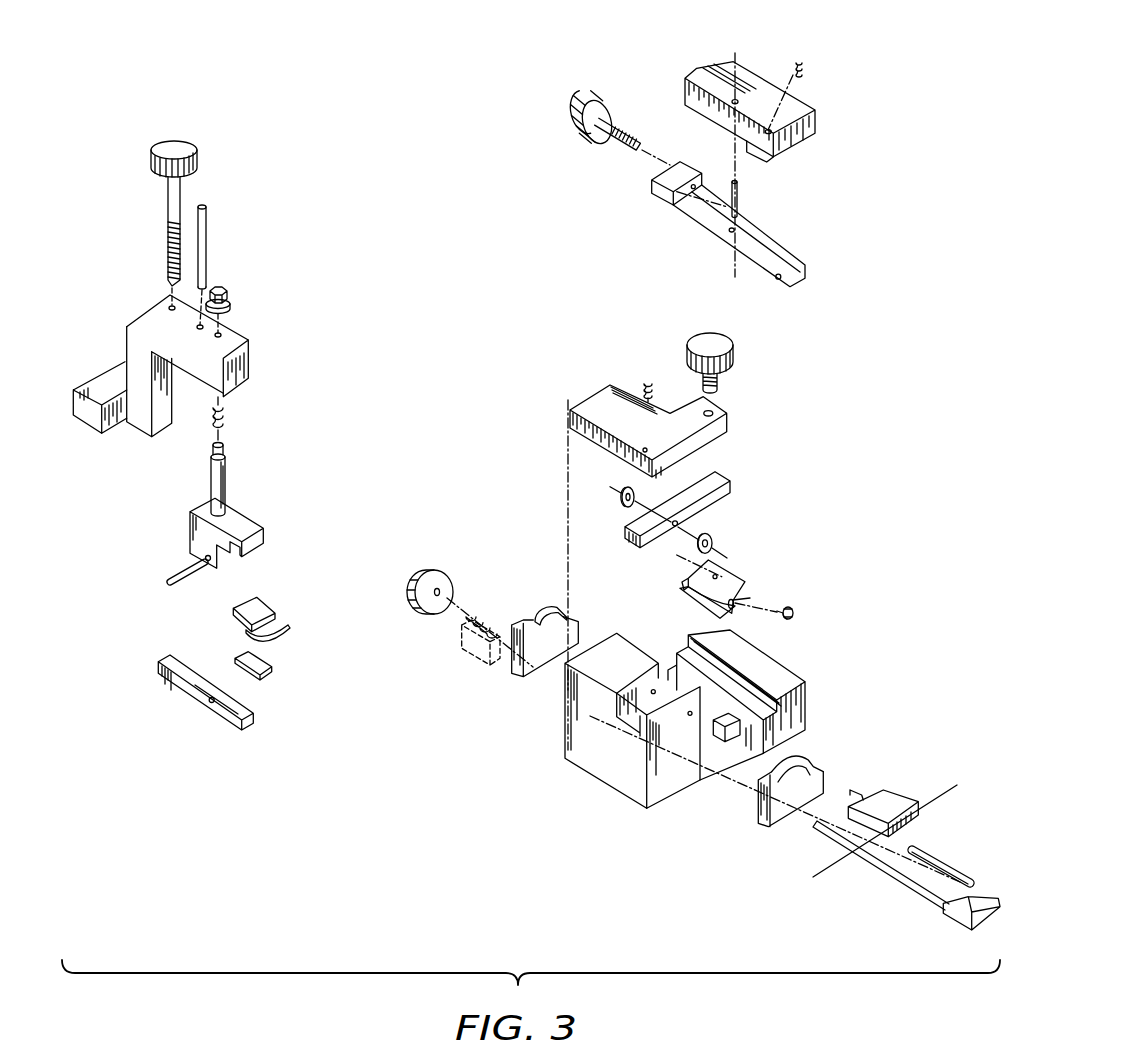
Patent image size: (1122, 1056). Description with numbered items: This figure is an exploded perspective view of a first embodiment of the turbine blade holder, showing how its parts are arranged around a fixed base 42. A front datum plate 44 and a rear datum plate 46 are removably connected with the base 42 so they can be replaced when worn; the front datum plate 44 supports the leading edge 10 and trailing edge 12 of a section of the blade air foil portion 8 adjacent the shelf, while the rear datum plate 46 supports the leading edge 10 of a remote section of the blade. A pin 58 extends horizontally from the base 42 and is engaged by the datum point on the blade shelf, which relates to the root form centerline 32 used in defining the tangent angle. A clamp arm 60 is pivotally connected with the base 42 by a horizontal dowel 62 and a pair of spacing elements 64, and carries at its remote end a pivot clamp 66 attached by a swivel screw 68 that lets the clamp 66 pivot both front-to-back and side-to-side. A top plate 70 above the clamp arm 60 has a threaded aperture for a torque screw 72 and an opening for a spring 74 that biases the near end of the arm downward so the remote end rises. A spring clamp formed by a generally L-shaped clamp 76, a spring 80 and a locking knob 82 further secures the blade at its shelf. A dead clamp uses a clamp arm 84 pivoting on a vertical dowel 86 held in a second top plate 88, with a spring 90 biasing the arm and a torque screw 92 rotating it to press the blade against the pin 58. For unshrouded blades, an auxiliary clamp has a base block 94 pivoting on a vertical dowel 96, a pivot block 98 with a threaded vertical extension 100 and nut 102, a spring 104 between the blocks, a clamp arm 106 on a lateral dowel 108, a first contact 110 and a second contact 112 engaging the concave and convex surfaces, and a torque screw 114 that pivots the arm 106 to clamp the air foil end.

The air foil portion 8 is at (277, 626).
The leading edge 10 is at (538, 627).
The trailing edge 12 is at (815, 760).
The root form centerline 32 is at (830, 879).
The fixed base 42 is at (806, 688).
The front datum plate 44 is at (822, 778).
The rear datum plate 46 is at (522, 674).
The pin 58 is at (872, 790).
The clamp arm 60 is at (731, 488).
The dowel 62 is at (945, 857).
The spacing elements 64 is at (712, 537).
The pivot clamp 66 is at (728, 575).
The swivel screw 68 is at (794, 615).
The top plate 70 is at (728, 428).
The torque screw 72 is at (698, 342).
The spring 74 is at (644, 382).
The L-shaped clamp 76 is at (953, 917).
The spring 80 is at (488, 610).
The locking knob 82 is at (428, 570).
The clamp arm 84 is at (800, 273).
The dowel 86 is at (740, 203).
The second top plate 88 is at (815, 128).
The spring 90 is at (800, 63).
The torque screw 92 is at (613, 143).
The base block 94 is at (113, 377).
The dowel 96 is at (207, 232).
The pivot block 98 is at (188, 540).
The threaded vertical extension 100 is at (227, 485).
The nut 102 is at (223, 294).
The spring 104 is at (223, 415).
The clamp arm 106 is at (228, 718).
The dowel 108 is at (175, 575).
The first contact 110 is at (262, 685).
The second contact 112 is at (233, 612).
The torque screw 114 is at (178, 150).